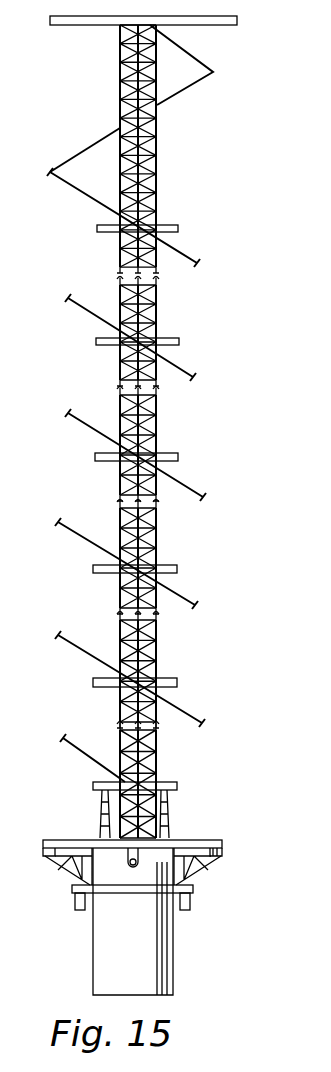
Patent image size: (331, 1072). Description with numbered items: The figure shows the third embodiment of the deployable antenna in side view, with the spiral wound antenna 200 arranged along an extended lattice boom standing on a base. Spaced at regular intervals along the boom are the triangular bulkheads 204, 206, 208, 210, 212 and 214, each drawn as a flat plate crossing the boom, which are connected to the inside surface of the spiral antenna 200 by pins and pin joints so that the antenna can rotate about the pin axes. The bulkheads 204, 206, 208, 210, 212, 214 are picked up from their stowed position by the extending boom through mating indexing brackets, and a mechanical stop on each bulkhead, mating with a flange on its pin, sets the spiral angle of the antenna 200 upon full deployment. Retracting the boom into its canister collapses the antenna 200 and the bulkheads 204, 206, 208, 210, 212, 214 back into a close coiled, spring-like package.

The spiral wound antenna 200 is at (186, 88).
The bulkhead 204 is at (178, 229).
The bulkhead 206 is at (179, 342).
The bulkhead 208 is at (178, 457).
The bulkhead 210 is at (177, 569).
The bulkhead 212 is at (177, 683).
The bulkhead 214 is at (177, 786).